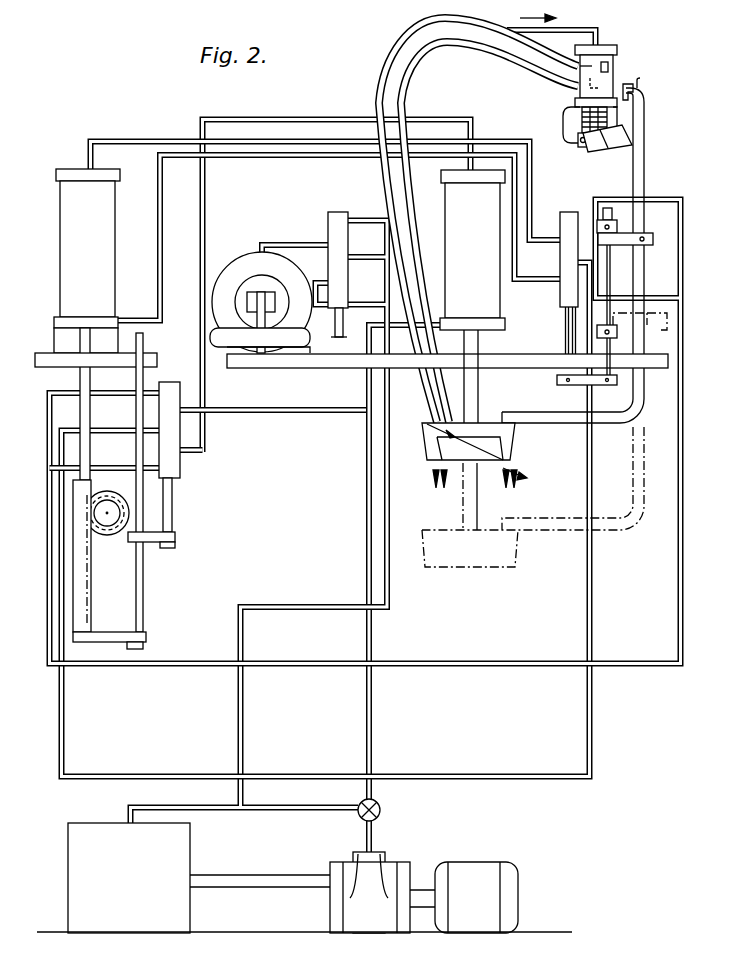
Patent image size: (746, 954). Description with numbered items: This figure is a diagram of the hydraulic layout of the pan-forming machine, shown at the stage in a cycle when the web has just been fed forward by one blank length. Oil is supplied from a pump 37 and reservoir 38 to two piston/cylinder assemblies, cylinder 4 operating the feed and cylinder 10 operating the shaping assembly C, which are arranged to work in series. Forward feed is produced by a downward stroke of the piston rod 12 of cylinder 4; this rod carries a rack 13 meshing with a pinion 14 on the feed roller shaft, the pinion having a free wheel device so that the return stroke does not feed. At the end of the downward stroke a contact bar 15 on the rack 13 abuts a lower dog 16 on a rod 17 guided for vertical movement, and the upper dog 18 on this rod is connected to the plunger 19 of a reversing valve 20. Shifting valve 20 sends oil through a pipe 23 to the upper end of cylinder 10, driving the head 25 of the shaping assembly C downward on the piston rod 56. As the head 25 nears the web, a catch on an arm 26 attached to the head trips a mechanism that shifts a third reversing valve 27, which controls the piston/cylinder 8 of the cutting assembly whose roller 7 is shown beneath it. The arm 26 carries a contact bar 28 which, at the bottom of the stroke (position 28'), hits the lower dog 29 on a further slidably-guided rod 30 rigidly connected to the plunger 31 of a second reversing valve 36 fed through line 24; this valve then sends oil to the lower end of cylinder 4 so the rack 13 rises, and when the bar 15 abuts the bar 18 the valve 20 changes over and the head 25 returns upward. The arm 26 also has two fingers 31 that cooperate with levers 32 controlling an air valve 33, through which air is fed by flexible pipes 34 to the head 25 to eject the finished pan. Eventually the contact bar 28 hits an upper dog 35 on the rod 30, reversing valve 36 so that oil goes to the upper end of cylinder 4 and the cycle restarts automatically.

The cylinder 4 is at (60, 240).
The roller 7 is at (288, 340).
The piston/cylinder of the cutting assembly 8 is at (242, 262).
The cylinder 10 is at (472, 250).
The piston rod 12 is at (85, 376).
The rack 13 is at (88, 545).
The pinion 14 is at (107, 513).
The contact bar 15 is at (122, 633).
The lower dog 16 is at (143, 646).
The rod 17 is at (143, 570).
The upper dog 18 is at (176, 538).
The plunger 19 is at (170, 500).
The reversing valve 20 is at (178, 425).
The pipe 23 is at (200, 310).
The line 24 is at (101, 666).
The head 25 is at (517, 432).
The arm 26 is at (617, 424).
The third reversing valve 27 is at (339, 215).
The contact bar 28 is at (638, 226).
The contact bar position 28' is at (640, 334).
The lower dog 29 is at (617, 337).
The slidably-guided rod 30 is at (610, 273).
The plunger 31 is at (566, 330).
The levers 32 is at (612, 150).
The air valve 33 is at (617, 62).
The flexible pipes 34 is at (440, 381).
The upper dog 35 is at (617, 223).
The second reversing valve 36 is at (566, 222).
The pump 37 is at (372, 860).
The reservoir 38 is at (129, 878).
The piston rod 56 is at (478, 383).
The shaping assembly C is at (516, 455).